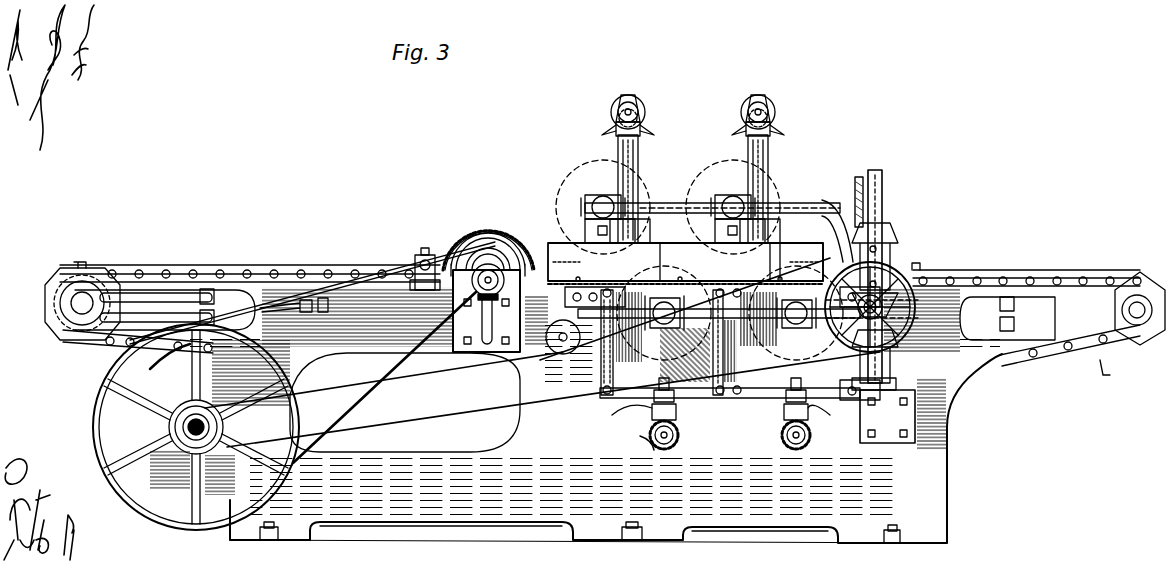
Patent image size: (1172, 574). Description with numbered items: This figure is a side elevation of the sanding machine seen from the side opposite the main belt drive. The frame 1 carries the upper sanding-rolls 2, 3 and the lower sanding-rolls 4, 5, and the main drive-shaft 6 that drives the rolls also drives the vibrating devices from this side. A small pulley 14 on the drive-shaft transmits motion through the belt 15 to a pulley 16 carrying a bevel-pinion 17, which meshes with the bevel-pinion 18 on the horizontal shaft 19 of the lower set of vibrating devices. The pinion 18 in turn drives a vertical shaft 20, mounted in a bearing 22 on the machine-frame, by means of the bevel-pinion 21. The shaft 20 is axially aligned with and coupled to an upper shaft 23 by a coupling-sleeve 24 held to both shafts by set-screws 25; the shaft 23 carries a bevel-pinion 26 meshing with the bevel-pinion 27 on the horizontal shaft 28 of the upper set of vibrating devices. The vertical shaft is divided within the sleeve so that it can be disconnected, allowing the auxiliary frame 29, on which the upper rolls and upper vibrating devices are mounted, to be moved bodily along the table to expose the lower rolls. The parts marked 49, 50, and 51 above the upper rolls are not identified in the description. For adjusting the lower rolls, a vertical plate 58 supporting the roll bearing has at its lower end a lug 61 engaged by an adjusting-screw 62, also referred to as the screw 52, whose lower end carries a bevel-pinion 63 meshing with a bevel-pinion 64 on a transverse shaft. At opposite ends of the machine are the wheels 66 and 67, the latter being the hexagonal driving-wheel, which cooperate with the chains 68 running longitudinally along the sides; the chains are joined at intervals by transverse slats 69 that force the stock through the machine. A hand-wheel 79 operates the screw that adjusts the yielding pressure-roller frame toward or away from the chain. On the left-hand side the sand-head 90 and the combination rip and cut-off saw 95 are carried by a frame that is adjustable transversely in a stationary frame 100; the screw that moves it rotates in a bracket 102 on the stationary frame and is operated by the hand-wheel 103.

The frame 1 is at (596, 415).
The upper sanding-roll 2 is at (603, 207).
The upper sanding-roll 3 is at (733, 207).
The lower sanding-roll 4 is at (685, 263).
The lower sanding-roll 5 is at (801, 262).
The main drive-shaft 6 is at (180, 448).
The small pulley 14 is at (196, 427).
The belt 15 is at (558, 404).
The pulley 16 is at (893, 309).
The bevel-pinion 17 is at (887, 338).
The bevel-pinion 18 is at (800, 327).
The horizontal shaft 19 is at (570, 350).
The vertical shaft 20 is at (887, 416).
The bevel-pinion 21 is at (885, 322).
The bearing 22 is at (894, 386).
The upper shaft 23 is at (883, 176).
The coupling-sleeve 24 is at (924, 277).
The set-screws 25 is at (876, 300).
The bevel-pinion 26 is at (892, 236).
The bevel-pinion 27 is at (854, 190).
The horizontal shaft 28 is at (678, 204).
The auxiliary frame 29 is at (715, 262).
The handwheel 49 is at (628, 98).
The screw head 50 is at (742, 105).
The bracket 51 is at (732, 130).
The screw 52 is at (748, 150).
The vertical plate 58 is at (722, 343).
The lug 61 is at (648, 415).
The adjusting-screw 62 is at (676, 415).
The bevel-pinion 63 is at (648, 440).
The bevel-pinion 64 is at (670, 450).
The wheel 66 is at (68, 322).
The driving-wheel 67 is at (1136, 330).
The chains 68 is at (583, 318).
The transverse slats 69 is at (80, 266).
The hand-wheel 79 is at (418, 258).
The sand-head 90 is at (490, 232).
The saw 95 is at (452, 236).
The stationary frame 100 is at (464, 291).
The bracket 102 is at (501, 299).
The hand-wheel 103 is at (448, 304).